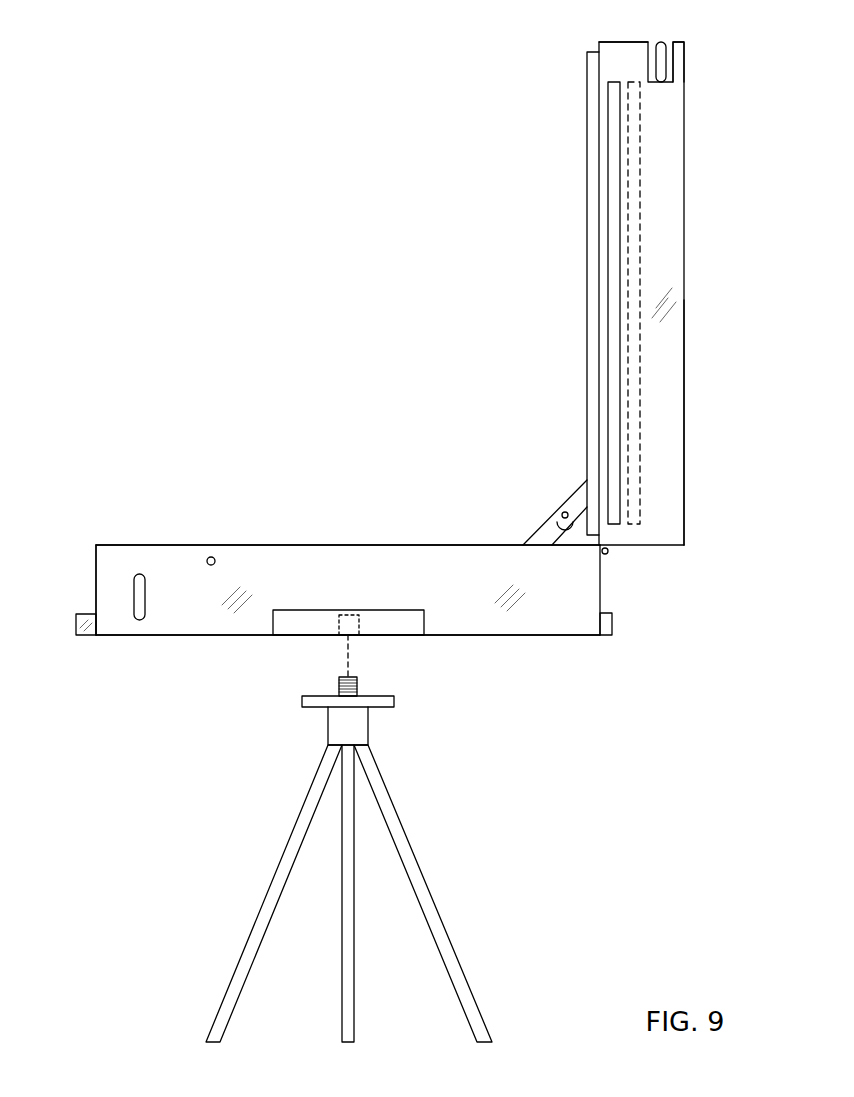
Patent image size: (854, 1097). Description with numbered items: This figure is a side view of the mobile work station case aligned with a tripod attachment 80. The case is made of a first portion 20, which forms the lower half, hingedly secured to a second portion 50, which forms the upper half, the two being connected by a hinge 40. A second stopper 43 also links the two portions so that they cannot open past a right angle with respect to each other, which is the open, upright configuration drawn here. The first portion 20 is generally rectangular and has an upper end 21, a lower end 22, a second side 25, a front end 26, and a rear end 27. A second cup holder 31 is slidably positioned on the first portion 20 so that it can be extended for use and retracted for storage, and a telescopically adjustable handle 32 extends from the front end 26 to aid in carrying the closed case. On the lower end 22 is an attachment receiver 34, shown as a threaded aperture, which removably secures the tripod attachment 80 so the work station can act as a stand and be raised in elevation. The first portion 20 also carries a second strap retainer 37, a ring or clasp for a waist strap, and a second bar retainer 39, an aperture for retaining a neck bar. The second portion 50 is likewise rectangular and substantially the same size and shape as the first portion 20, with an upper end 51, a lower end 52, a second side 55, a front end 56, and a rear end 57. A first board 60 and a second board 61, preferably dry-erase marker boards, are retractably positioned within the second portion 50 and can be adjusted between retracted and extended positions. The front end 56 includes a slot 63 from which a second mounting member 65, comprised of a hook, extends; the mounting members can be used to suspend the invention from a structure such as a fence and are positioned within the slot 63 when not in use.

The first portion 20 is at (170, 635).
The upper end 21 is at (348, 545).
The lower end 22 is at (465, 635).
The second side 25 is at (540, 603).
The front end 26 is at (96, 557).
The rear end 27 is at (612, 614).
The second cup holder 31 is at (298, 620).
The handle 32 is at (76, 625).
The attachment receiver 34 is at (362, 625).
The second strap retainer 37 is at (133, 582).
The second bar retainer 39 is at (211, 557).
The hinge 40 is at (605, 555).
The second stopper 43 is at (543, 522).
The second portion 50 is at (684, 217).
The upper end 51 is at (684, 330).
The lower end 52 is at (587, 333).
The second side 55 is at (657, 150).
The front end 56 is at (617, 42).
The rear end 57 is at (660, 545).
The first board 60 is at (645, 398).
The second board 61 is at (609, 150).
The slot 63 is at (678, 78).
The second mounting member 65 is at (662, 62).
The tripod attachment 80 is at (328, 732).